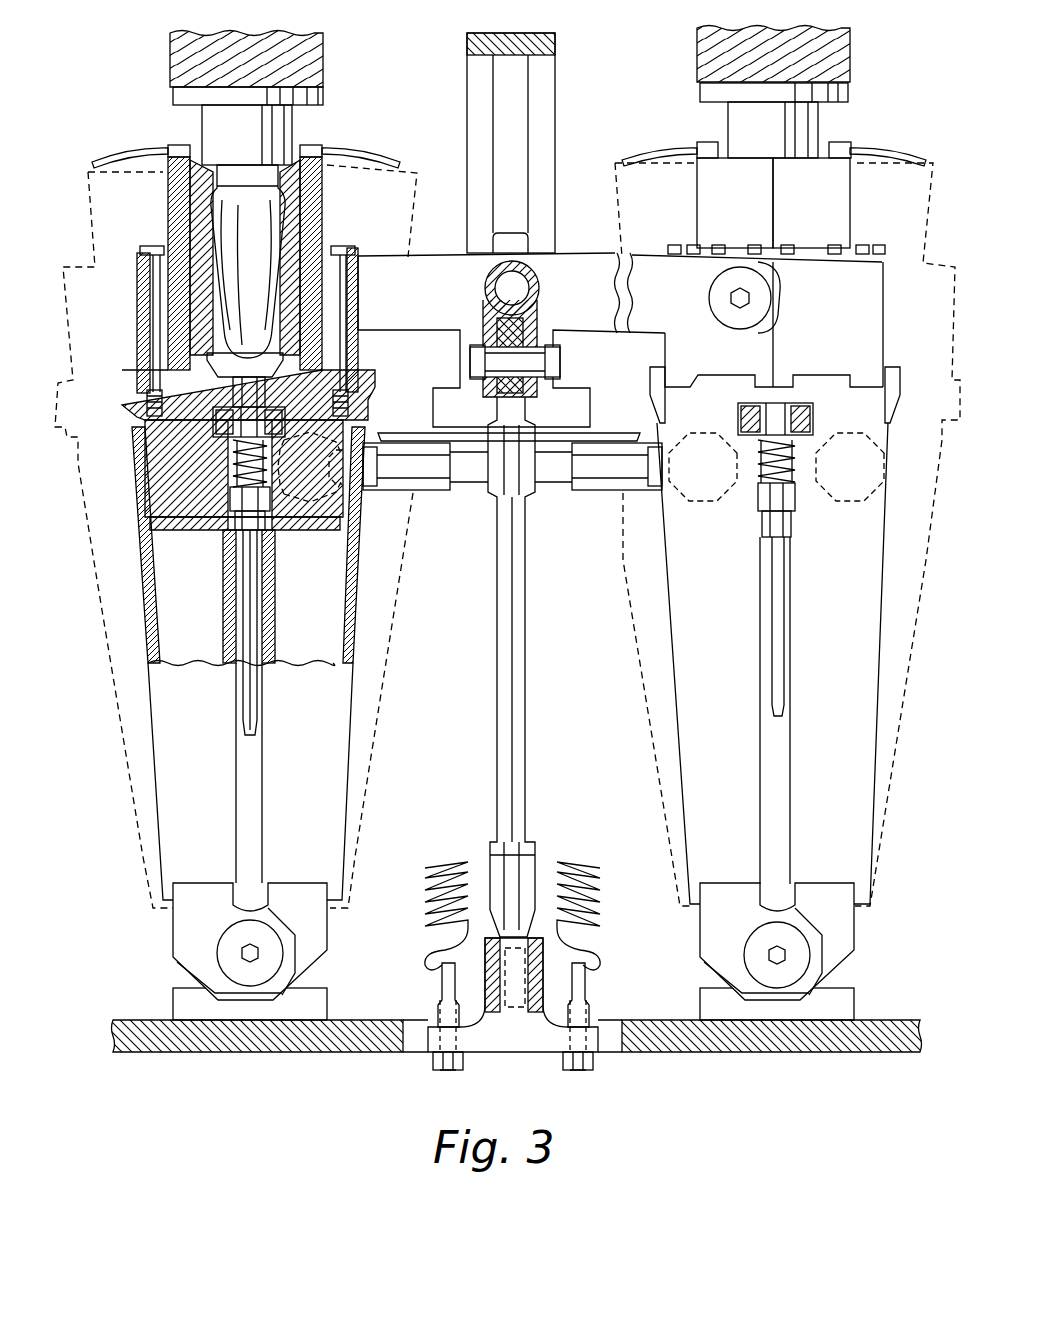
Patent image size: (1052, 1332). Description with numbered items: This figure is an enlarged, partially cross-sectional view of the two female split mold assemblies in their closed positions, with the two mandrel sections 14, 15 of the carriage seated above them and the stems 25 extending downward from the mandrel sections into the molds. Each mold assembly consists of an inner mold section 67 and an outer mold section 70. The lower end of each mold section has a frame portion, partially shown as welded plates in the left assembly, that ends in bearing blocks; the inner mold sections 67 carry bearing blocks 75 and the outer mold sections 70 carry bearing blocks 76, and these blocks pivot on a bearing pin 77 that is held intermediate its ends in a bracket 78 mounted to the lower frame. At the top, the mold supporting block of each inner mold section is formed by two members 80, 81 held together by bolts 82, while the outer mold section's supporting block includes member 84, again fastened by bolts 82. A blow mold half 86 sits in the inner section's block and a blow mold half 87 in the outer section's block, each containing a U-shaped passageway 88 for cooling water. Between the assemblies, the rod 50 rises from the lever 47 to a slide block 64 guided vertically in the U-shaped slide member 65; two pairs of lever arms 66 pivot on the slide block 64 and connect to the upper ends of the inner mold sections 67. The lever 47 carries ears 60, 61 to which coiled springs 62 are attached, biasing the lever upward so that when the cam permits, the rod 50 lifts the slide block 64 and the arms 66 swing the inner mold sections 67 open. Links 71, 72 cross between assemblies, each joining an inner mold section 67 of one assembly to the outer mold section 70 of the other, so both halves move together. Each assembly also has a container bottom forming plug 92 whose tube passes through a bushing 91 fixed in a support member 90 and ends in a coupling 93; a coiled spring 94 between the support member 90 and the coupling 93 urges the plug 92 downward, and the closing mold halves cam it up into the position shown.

The mandrel section 14 is at (168, 48).
The mandrel section 15 is at (855, 47).
The stem 25 is at (198, 124).
The lever 47 is at (500, 1020).
The rod 50 is at (497, 645).
The ear 60 is at (426, 1058).
The ear 61 is at (600, 1058).
The coiled spring 62 is at (426, 890).
The slide block 64 is at (508, 230).
The slide member 65 is at (556, 95).
The lever arm 66 is at (584, 322).
The inner mold section 67 is at (328, 787).
The outer mold section 70 is at (165, 790).
The link 71 is at (606, 490).
The link 72 is at (420, 490).
The bearing block 75 is at (318, 938).
The bearing block 76 is at (183, 927).
The bearing pin 77 is at (235, 965).
The bracket 78 is at (172, 1006).
The member 80 is at (370, 392).
The member 81 is at (360, 312).
The bolt 82 is at (152, 246).
The member 84 is at (137, 312).
The blow mold half 86 is at (715, 200).
The blow mold half 87 is at (845, 204).
The passageway 88 is at (186, 203).
The support member 90 is at (286, 422).
The bushing 91 is at (232, 396).
The container bottom forming plug 92 is at (250, 355).
The coupling 93 is at (238, 525).
The coiled spring 94 is at (232, 470).